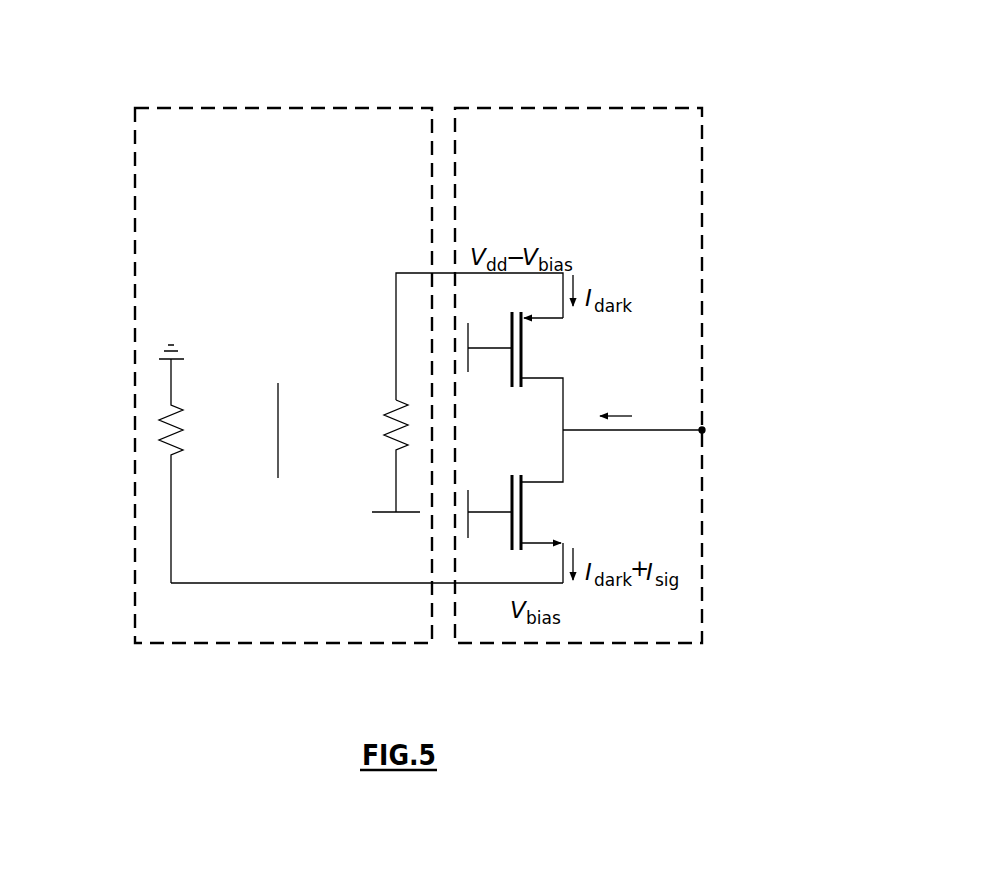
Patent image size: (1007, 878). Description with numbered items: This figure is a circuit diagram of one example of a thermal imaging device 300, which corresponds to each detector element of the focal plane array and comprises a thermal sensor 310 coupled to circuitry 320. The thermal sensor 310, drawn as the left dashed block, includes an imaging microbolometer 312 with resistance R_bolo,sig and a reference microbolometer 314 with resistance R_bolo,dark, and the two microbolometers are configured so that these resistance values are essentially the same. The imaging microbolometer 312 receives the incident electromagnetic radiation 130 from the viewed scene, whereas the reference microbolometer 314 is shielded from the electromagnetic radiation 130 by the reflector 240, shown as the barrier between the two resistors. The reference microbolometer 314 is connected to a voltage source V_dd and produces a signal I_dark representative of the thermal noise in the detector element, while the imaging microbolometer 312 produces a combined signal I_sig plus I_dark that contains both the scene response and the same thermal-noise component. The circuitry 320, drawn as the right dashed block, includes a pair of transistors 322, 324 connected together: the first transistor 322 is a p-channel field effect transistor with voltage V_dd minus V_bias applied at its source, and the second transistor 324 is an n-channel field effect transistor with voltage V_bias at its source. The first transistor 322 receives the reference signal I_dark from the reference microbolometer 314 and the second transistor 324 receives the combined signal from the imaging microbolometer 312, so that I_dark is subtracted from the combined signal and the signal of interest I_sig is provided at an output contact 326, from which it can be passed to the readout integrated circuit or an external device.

The incident electromagnetic radiation 130 is at (126, 439).
The reflector 240 is at (278, 412).
The thermal imaging device 300 is at (285, 84).
The thermal sensor 310 is at (135, 148).
The imaging microbolometer 312 is at (162, 446).
The reference microbolometer 314 is at (387, 425).
The circuitry 320 is at (702, 172).
The first transistor 322 is at (557, 348).
The second transistor 324 is at (557, 516).
The output contact 326 is at (703, 430).